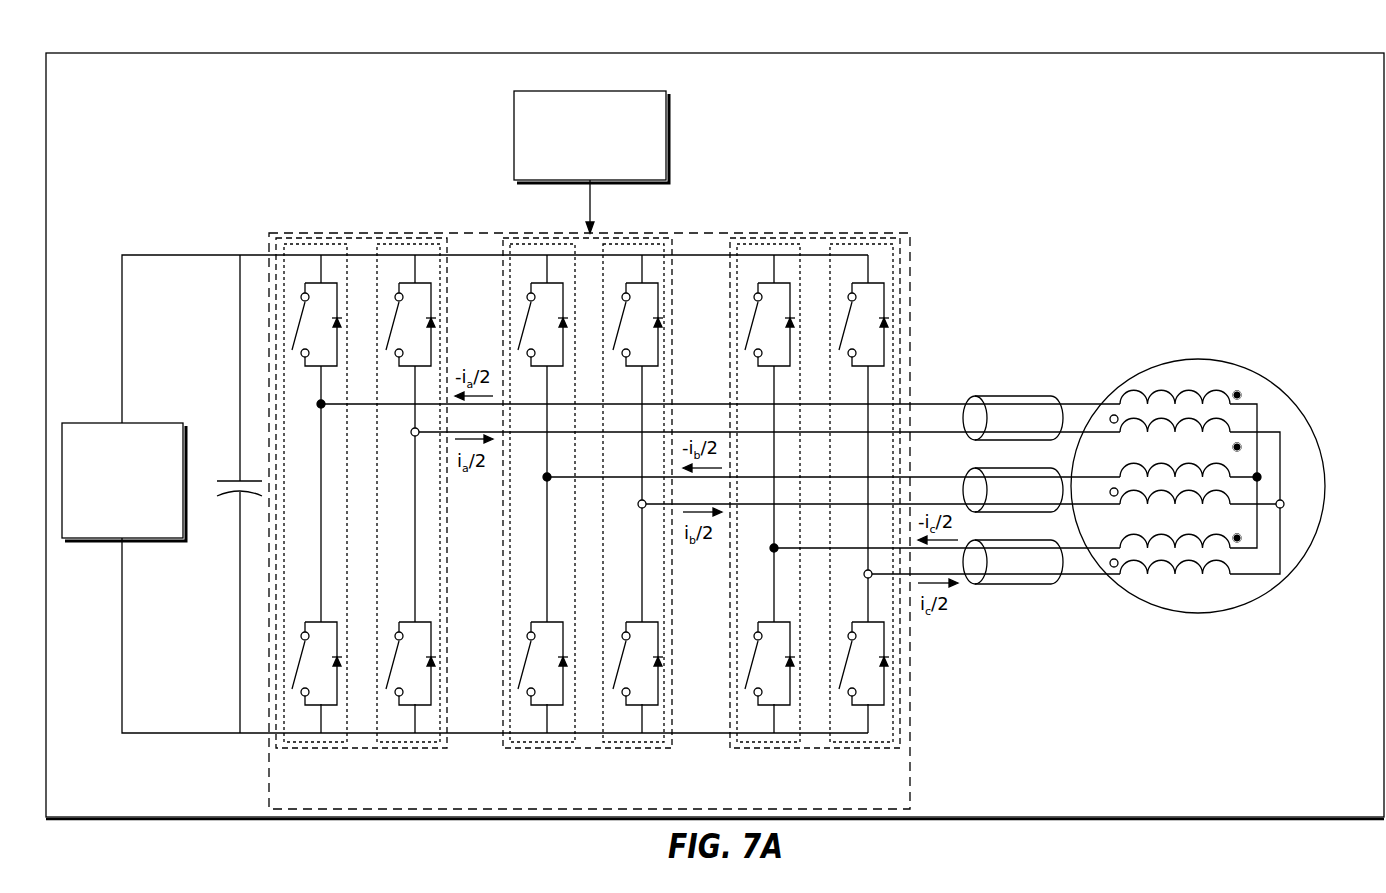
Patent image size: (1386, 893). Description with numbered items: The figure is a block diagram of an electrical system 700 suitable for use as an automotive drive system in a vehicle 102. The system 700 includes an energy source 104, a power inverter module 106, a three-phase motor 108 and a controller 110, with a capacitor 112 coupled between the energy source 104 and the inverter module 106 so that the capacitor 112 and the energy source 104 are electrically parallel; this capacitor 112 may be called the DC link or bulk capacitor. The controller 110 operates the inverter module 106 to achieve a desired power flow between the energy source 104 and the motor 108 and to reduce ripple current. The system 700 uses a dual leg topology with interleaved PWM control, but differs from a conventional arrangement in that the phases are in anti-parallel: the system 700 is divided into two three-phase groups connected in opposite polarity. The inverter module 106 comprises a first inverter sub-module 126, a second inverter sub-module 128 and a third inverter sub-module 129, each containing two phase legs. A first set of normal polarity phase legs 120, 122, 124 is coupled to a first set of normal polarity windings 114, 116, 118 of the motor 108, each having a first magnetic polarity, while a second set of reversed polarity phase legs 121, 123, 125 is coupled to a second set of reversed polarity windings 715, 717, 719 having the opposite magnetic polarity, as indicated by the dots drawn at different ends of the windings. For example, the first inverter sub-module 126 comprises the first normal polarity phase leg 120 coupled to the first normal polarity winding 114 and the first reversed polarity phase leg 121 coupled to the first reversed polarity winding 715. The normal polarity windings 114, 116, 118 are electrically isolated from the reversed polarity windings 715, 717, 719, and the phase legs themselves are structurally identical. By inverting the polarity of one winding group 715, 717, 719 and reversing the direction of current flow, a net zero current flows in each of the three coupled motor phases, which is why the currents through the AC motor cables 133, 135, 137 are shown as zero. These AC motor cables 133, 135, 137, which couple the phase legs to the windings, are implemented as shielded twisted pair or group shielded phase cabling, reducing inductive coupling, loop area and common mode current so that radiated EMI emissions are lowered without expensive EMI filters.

The system 700 is at (1245, 126).
The vehicle 102 is at (200, 52).
The energy source 104 is at (93, 423).
The power inverter module 106 is at (910, 770).
The motor 108 is at (1265, 377).
The controller 110 is at (514, 115).
The capacitor 112 is at (222, 480).
The first normal polarity winding 114 is at (1187, 390).
The second normal polarity winding 116 is at (1215, 470).
The third normal polarity winding 118 is at (1215, 540).
The first reversed polarity winding 715 is at (1215, 425).
The second reversed polarity winding 717 is at (1215, 497).
The third reversed polarity winding 719 is at (1215, 568).
The first normal polarity phase leg 120 is at (321, 757).
The first reversed polarity phase leg 121 is at (415, 757).
The second normal polarity phase leg 122 is at (547, 757).
The second reversed polarity phase leg 123 is at (642, 757).
The third normal polarity phase leg 124 is at (774, 757).
The third reversed polarity phase leg 125 is at (868, 757).
The first inverter sub-module 126 is at (350, 236).
The second inverter sub-module 128 is at (505, 236).
The third inverter sub-module 129 is at (754, 236).
The AC motor cable 133 is at (1035, 396).
The AC motor cable 135 is at (985, 468).
The AC motor cable 137 is at (1015, 585).